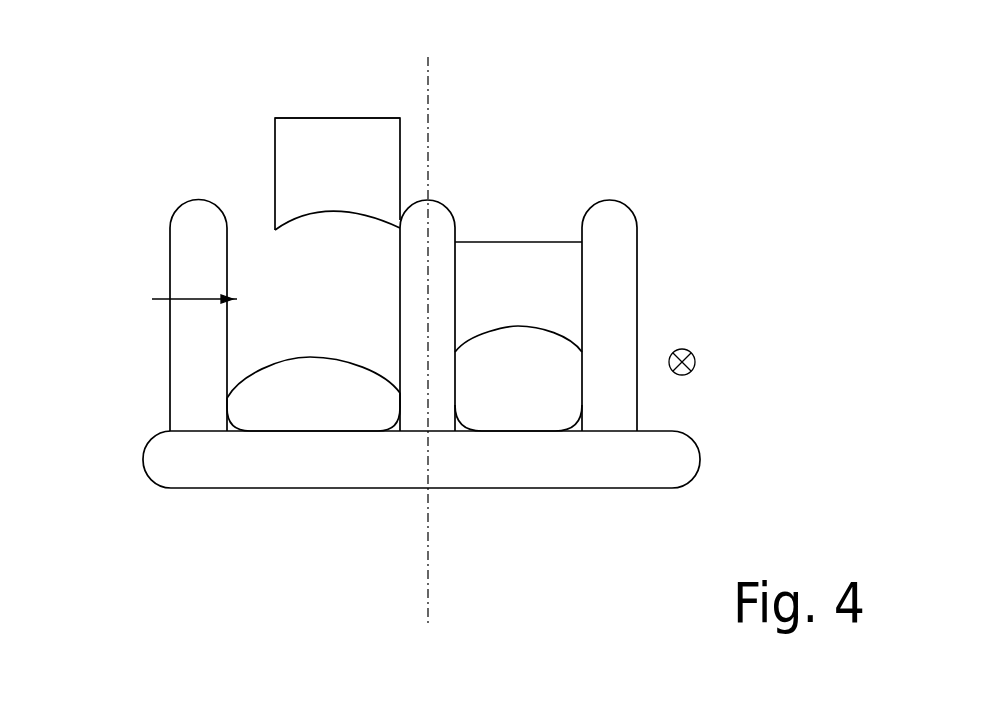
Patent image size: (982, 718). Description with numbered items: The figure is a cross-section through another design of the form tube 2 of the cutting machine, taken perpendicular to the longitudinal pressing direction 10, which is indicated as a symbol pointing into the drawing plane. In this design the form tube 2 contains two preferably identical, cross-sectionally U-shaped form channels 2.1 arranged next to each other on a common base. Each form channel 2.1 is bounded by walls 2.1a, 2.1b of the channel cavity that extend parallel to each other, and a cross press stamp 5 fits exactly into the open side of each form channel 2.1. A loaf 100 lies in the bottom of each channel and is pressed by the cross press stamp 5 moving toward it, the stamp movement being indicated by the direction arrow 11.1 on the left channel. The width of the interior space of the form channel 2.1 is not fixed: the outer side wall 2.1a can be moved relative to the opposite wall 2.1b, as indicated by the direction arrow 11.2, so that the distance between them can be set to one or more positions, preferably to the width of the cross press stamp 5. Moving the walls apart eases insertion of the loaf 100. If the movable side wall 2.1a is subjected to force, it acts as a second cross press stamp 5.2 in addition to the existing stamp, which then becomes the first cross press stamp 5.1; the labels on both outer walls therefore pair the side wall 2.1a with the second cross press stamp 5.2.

The form tube 2 is at (162, 132).
The form channel 2.1 is at (421, 459).
The side wall 2.1a is at (406, 316).
The opposite wall 2.1b is at (437, 240).
The cross press stamp 5 is at (428, 274).
The first cross press stamp 5.1 is at (518, 242).
The second cross press stamp 5.2 is at (192, 228).
The longitudinal pressing direction 10 is at (697, 363).
The first insertion direction 11.1 is at (336, 118).
The second insertion direction 11.2 is at (158, 303).
The loaf 100 is at (385, 394).